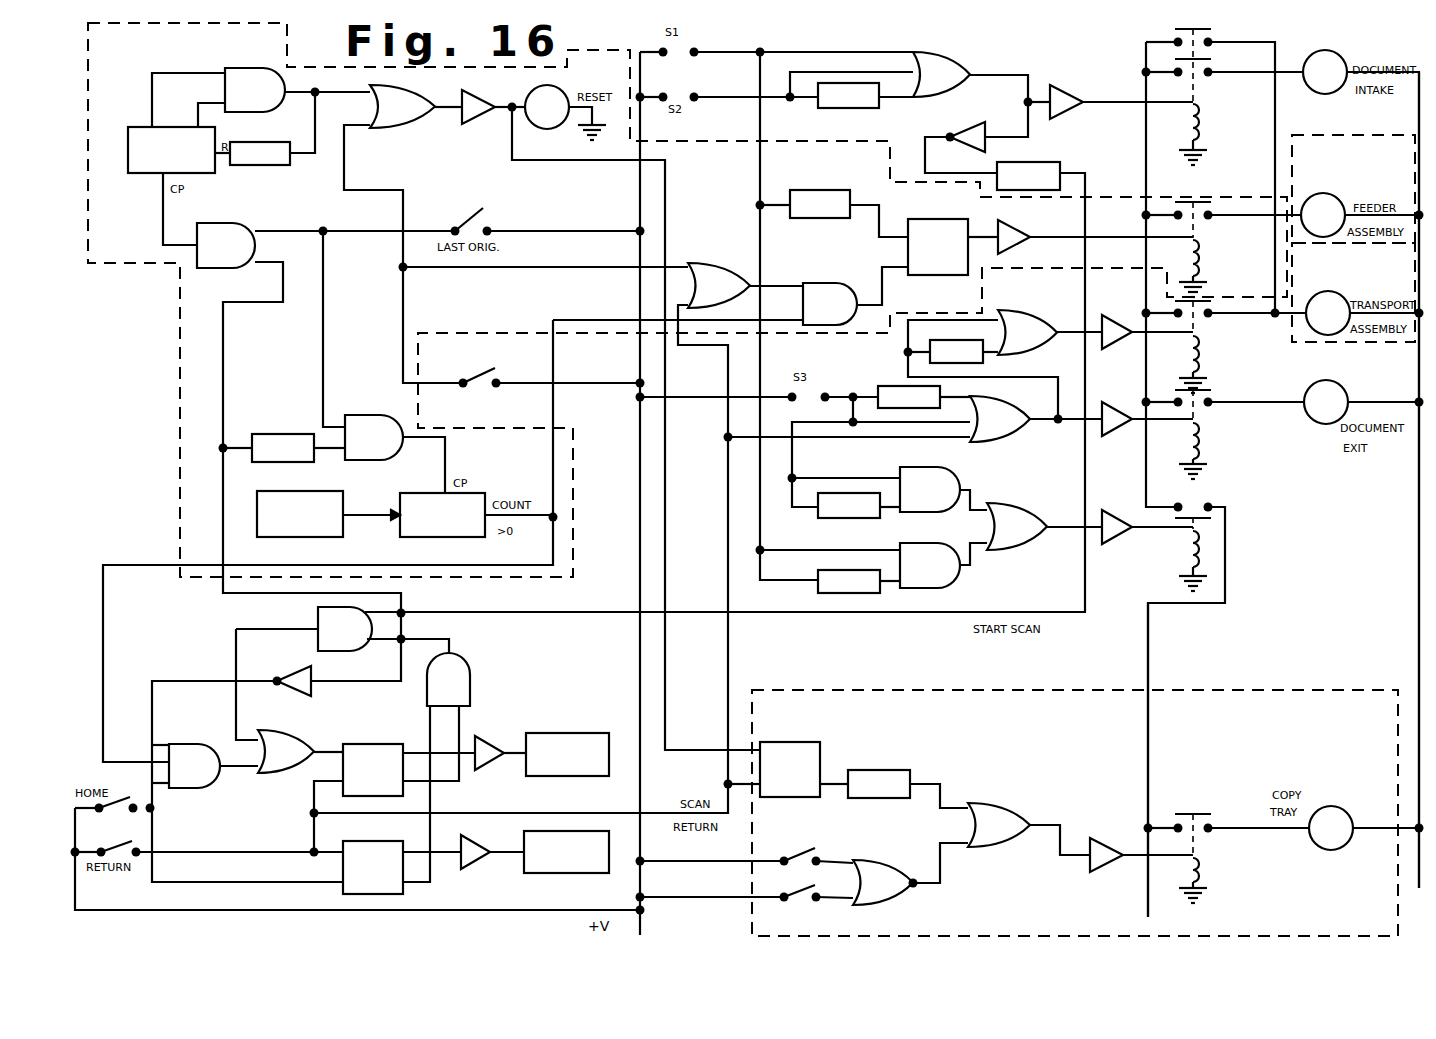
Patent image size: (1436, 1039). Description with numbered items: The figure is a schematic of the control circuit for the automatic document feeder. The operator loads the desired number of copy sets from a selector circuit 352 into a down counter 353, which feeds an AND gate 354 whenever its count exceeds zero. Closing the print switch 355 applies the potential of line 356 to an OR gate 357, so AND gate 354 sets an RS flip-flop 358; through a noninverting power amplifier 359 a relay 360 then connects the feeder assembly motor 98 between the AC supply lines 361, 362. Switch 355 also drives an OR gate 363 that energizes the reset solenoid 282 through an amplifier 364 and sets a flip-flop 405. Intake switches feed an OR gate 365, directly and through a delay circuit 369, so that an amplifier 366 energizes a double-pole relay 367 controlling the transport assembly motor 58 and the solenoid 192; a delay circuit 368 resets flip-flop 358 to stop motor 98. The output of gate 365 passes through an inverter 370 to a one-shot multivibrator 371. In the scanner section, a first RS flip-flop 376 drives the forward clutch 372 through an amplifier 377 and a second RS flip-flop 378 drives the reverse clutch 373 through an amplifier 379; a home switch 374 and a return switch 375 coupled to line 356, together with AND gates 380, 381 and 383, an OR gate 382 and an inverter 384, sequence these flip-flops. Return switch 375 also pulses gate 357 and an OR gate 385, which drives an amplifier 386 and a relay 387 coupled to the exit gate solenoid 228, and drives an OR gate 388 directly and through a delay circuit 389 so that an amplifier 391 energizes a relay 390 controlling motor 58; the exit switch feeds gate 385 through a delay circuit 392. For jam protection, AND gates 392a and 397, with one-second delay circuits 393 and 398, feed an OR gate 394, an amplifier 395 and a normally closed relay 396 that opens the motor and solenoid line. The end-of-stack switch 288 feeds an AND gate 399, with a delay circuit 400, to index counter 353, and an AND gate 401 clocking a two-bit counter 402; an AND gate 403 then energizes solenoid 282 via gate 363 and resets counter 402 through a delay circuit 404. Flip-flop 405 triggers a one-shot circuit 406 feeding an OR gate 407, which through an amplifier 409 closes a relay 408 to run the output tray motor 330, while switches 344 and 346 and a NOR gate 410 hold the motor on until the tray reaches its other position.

The solenoid 192 is at (1340, 53).
The feeder assembly motor 98 is at (1338, 194).
The transport assembly motor 58 is at (1340, 292).
The exit gate solenoid 228 is at (1320, 424).
The reset solenoid 282 is at (557, 86).
The switch 288 is at (483, 218).
The output tray motor 330 is at (1346, 808).
The switch 344 is at (800, 848).
The switch 346 is at (798, 905).
The selector circuit 352 is at (318, 537).
The digital counter 353 is at (445, 537).
The AND gate 354 is at (858, 320).
The print switch 355 is at (495, 372).
The line 356 is at (642, 928).
The OR gate 357 is at (706, 263).
The RS-type flip-flop 358 is at (956, 204).
The noninverting power amplifier 359 is at (1012, 234).
The single-pole normally open relay 360 is at (1200, 262).
The AC supply line 361 is at (1148, 900).
The AC supply line 362 is at (1419, 885).
The OR gate 363 is at (394, 128).
The noninverting power amplifier 364 is at (497, 84).
The OR gate 365 is at (948, 53).
The noninverting power amplifier 366 is at (1070, 88).
The double-pole normally open relay 367 is at (1200, 126).
The delay circuit 368 is at (815, 190).
The delay circuit 369 is at (856, 108).
The logic inverter 370 is at (962, 128).
The one-shot multivibrator 371 is at (1050, 162).
The forward clutch 372 is at (572, 733).
The reverse clutch 373 is at (578, 873).
The home switch 374 is at (112, 822).
The return switch 375 is at (120, 842).
The first RS flip-flop 376 is at (357, 744).
The amplifier 377 is at (490, 746).
The second RS flip-flop 378 is at (357, 841).
The amplifier 379 is at (470, 868).
The AND gate 380 is at (470, 680).
The AND gate 381 is at (330, 651).
The OR gate 382 is at (285, 773).
The AND gate 383 is at (187, 750).
The inverter 384 is at (292, 696).
The OR gate 385 is at (1025, 436).
The power amplifier 386 is at (1120, 432).
The normally open relay 387 is at (1200, 450).
The OR gate 388 is at (1042, 296).
The delay circuit 389 is at (986, 366).
The relay 390 is at (1200, 360).
The amplifier 391 is at (1126, 298).
The delay circuit 392 is at (890, 376).
The AND gate 392a is at (955, 470).
The delay circuit 393 is at (832, 518).
The OR gate 394 is at (1046, 496).
The noninverting power amplifier 395 is at (1122, 544).
The single-pole normally closed relay 396 is at (1205, 550).
The AND gate 397 is at (950, 586).
The delay circuit 398 is at (832, 593).
The AND gate 399 is at (368, 460).
The delay circuit 400 is at (283, 434).
The AND gate 401 is at (232, 223).
The two-bit binary counter 402 is at (138, 173).
The AND gate 403 is at (248, 52).
The delay circuit 404 is at (254, 128).
The RS flip-flop 405 is at (806, 742).
The one-shot multivibrator circuit 406 is at (900, 770).
The OR gate 407 is at (1010, 847).
The normally open relay 408 is at (1200, 876).
The power amplifier 409 is at (1106, 838).
The NOR gate 410 is at (898, 905).